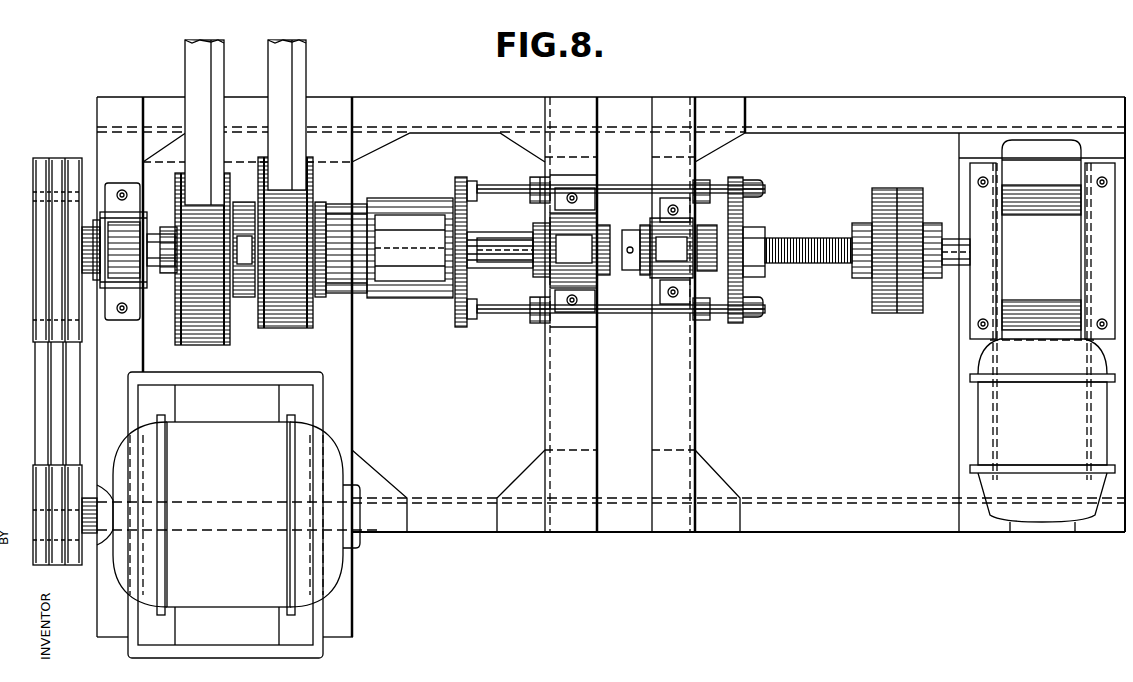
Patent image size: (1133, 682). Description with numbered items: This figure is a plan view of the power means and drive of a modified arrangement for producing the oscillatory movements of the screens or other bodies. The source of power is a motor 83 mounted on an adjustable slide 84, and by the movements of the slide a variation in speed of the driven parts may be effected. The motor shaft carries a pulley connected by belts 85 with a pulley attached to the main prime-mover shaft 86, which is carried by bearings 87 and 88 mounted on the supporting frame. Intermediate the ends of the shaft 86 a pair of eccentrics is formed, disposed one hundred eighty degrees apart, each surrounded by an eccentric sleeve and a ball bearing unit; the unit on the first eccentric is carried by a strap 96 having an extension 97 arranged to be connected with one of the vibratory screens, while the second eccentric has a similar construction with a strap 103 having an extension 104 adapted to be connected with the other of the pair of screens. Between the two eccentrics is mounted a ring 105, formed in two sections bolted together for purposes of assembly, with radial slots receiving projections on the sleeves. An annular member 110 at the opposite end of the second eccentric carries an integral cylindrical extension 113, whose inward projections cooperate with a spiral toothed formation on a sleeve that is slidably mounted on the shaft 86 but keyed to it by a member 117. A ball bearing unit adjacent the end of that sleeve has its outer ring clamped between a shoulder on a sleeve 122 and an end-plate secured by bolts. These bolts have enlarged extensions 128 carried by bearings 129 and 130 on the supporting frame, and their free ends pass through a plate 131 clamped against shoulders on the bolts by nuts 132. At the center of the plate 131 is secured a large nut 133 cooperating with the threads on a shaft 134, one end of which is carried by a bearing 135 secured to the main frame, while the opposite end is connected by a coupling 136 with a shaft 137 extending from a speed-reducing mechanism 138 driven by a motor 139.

The motor 83 is at (239, 515).
The adjustable slide 84 is at (297, 638).
The belts 85 is at (70, 381).
The main prime-mover shaft 86 is at (153, 225).
The bearing 87 is at (130, 270).
The bearing 88 is at (578, 235).
The strap 96 is at (198, 340).
The extension 97 is at (192, 73).
The strap 103 is at (285, 318).
The extension 104 is at (305, 72).
The ring 105 is at (246, 297).
The annular member 110 is at (320, 298).
The cylindrical extension 113 is at (340, 210).
The member 117 is at (496, 245).
The sleeve 122 is at (408, 198).
The enlarged extensions 128 is at (508, 194).
The bearing 129 is at (538, 186).
The bearing 130 is at (705, 186).
The plate 131 is at (742, 214).
The nuts 132 is at (757, 182).
The large nut 133 is at (758, 278).
The shaft 134 is at (790, 243).
The bearing 135 is at (662, 259).
The coupling 136 is at (912, 302).
The shaft 137 is at (952, 266).
The speed-reducing mechanism 138 is at (1030, 212).
The motor 139 is at (1015, 410).